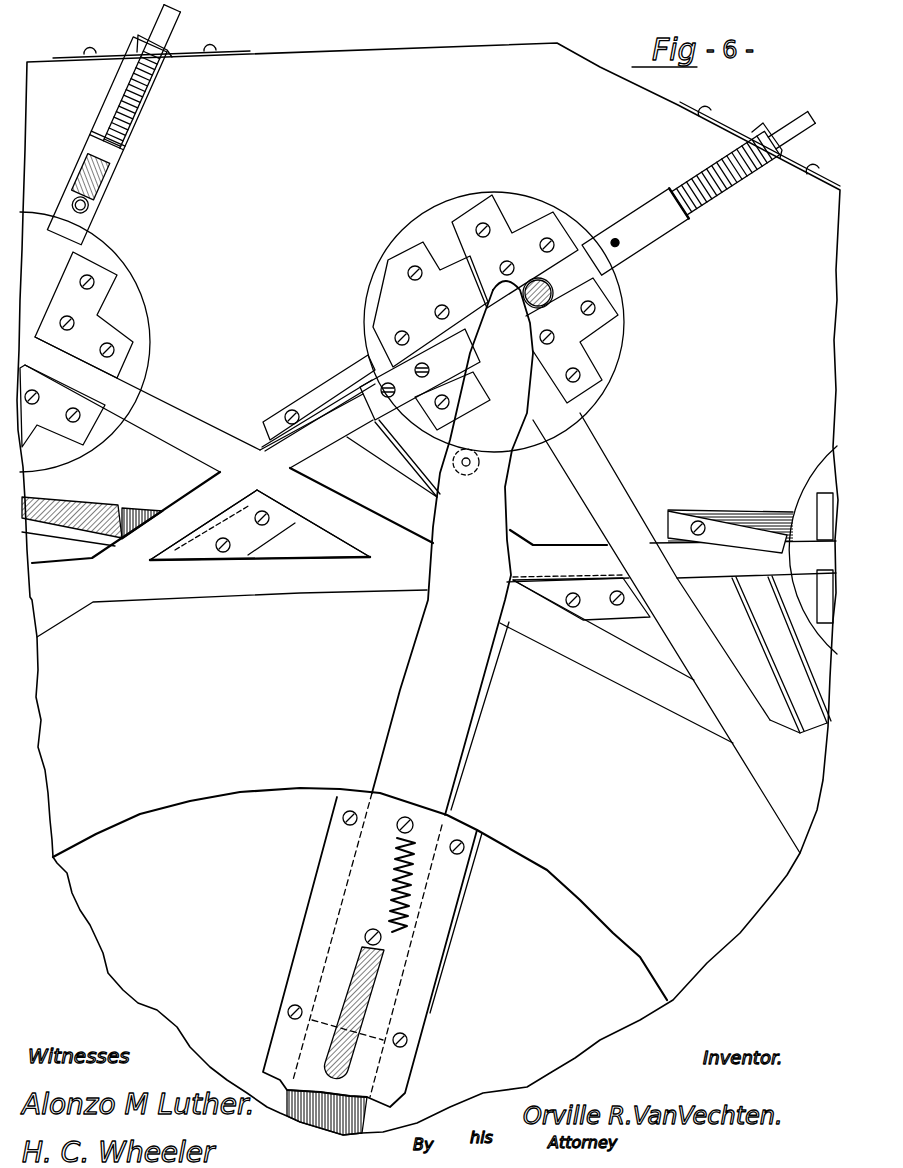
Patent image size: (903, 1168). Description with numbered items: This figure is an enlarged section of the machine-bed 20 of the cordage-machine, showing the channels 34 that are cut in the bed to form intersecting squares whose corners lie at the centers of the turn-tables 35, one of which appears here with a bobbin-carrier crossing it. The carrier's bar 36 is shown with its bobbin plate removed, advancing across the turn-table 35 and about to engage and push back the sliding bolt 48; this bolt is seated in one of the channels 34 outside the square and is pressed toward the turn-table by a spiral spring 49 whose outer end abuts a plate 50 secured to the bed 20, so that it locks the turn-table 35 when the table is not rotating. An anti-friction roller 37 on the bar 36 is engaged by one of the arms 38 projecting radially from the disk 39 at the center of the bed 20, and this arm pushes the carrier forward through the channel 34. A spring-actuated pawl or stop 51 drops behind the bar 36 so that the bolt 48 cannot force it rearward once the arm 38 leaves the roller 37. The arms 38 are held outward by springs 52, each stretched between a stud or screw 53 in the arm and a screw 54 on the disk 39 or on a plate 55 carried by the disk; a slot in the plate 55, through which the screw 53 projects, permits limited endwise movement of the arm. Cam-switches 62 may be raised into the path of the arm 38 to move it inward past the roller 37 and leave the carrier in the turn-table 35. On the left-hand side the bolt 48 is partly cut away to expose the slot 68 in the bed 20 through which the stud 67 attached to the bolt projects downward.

The bed 20 is at (428, 589).
The channels 34 is at (430, 595).
The turn-tables 35 is at (572, 340).
The bar 36 is at (425, 369).
The anti-friction roller 37 is at (553, 292).
The arms 38 is at (413, 689).
The disk 39 is at (360, 894).
The sliding bolt 48 is at (122, 157).
The spiral spring 49 is at (143, 95).
The plate 50 is at (755, 122).
The spring-actuated pawl or stop 51 is at (306, 402).
The springs 52 is at (400, 872).
The stud or screw 53 is at (364, 938).
The screw 54 is at (398, 824).
The plate 55 is at (345, 890).
The cam-switch 62 is at (426, 576).
The stud 67 is at (78, 205).
The slot 68 is at (83, 177).